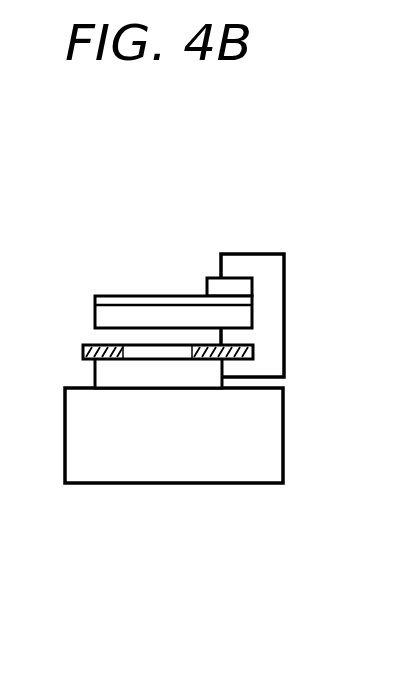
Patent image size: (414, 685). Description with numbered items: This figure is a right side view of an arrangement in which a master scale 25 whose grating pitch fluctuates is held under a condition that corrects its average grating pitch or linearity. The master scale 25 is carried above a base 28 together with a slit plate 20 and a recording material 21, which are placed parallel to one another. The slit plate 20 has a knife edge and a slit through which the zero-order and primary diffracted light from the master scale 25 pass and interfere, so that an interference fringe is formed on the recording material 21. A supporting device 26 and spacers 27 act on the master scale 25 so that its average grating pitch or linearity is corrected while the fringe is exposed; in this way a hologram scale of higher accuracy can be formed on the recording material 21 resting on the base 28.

The slit plate 20 is at (83, 345).
The recording material 21 is at (107, 373).
The master scale 25 is at (112, 302).
The supporting device 26 is at (258, 263).
The spacers 27 is at (218, 287).
The base 28 is at (180, 480).